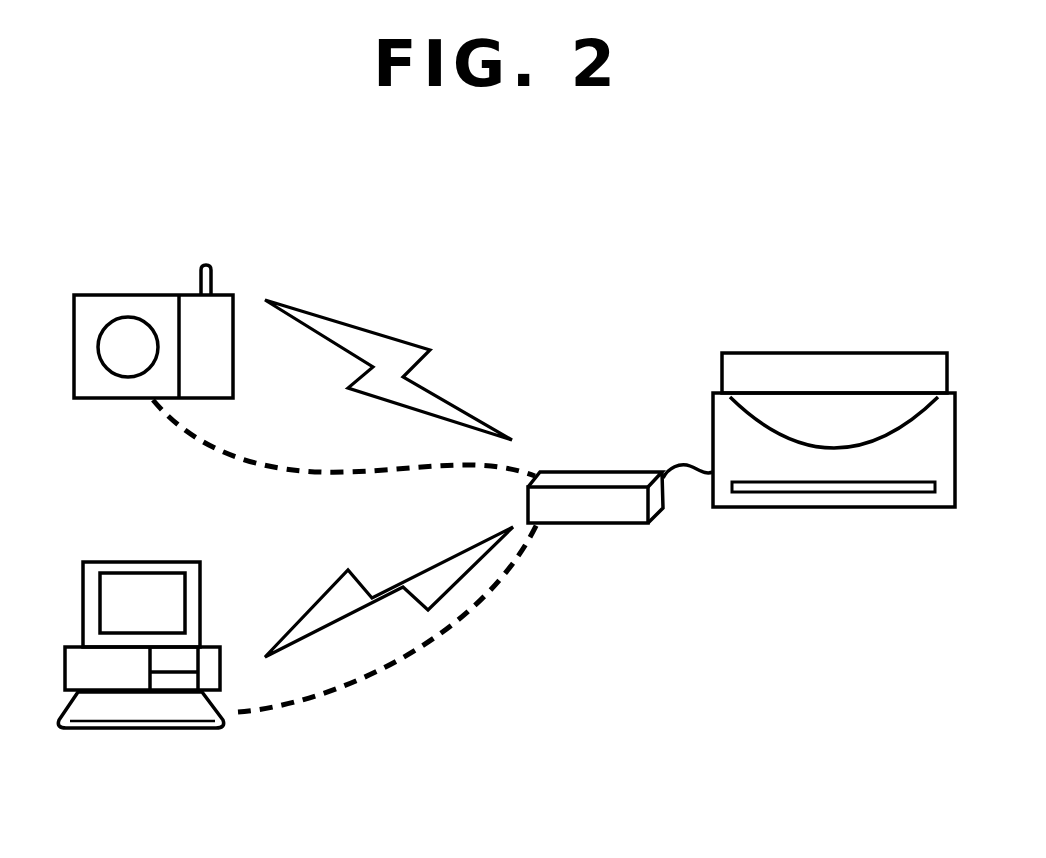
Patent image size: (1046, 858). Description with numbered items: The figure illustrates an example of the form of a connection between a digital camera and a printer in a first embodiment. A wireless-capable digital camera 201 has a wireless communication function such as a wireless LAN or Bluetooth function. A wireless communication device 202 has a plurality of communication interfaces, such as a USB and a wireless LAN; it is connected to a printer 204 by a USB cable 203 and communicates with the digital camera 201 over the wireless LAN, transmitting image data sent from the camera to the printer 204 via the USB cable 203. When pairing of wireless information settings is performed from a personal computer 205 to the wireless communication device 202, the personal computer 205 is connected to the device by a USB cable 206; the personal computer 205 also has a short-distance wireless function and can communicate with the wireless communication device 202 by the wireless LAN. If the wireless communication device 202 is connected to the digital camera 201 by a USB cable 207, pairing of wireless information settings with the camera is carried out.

The wireless-capable digital camera 201 is at (143, 295).
The wireless communication device 202 is at (603, 527).
The USB cable 203 is at (681, 467).
The printer 204 is at (833, 507).
The personal computer 205 is at (138, 730).
The USB cable 206 is at (390, 672).
The USB cable 207 is at (212, 438).